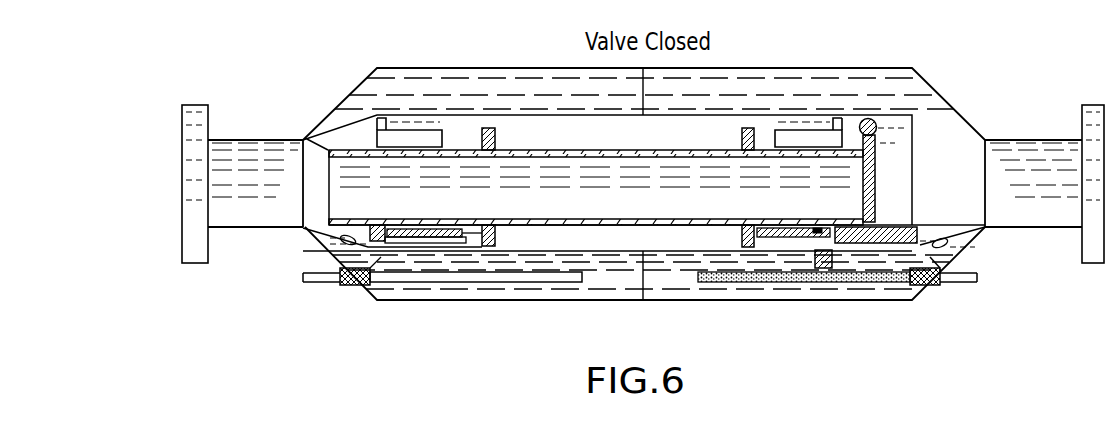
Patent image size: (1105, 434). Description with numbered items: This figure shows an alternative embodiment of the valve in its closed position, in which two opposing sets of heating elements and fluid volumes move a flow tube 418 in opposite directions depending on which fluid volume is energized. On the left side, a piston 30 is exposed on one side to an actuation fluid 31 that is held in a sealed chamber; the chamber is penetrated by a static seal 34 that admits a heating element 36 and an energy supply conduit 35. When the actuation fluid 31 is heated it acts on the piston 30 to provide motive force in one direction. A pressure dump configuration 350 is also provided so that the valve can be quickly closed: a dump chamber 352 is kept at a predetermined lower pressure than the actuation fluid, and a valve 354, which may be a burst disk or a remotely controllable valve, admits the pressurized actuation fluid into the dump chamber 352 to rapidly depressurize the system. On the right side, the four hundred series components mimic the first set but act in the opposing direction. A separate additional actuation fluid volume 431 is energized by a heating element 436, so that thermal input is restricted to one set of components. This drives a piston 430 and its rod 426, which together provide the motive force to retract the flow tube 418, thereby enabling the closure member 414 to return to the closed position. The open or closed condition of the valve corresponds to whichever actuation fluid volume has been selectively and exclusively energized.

The piston 30 is at (386, 241).
The actuation fluid 31 is at (537, 290).
The static seal 34 is at (353, 286).
The energy supply conduit 35 is at (316, 276).
The heating element 36 is at (480, 283).
The pressure dump configuration 350 is at (436, 126).
The dump chamber 352 is at (402, 137).
The valve 354 is at (381, 119).
The closure member 414 is at (874, 245).
The flow tube 418 is at (703, 224).
The rod 426 is at (787, 239).
The piston 430 is at (836, 244).
The additional actuation fluid volume 431 is at (937, 270).
The heating element 436 is at (818, 270).